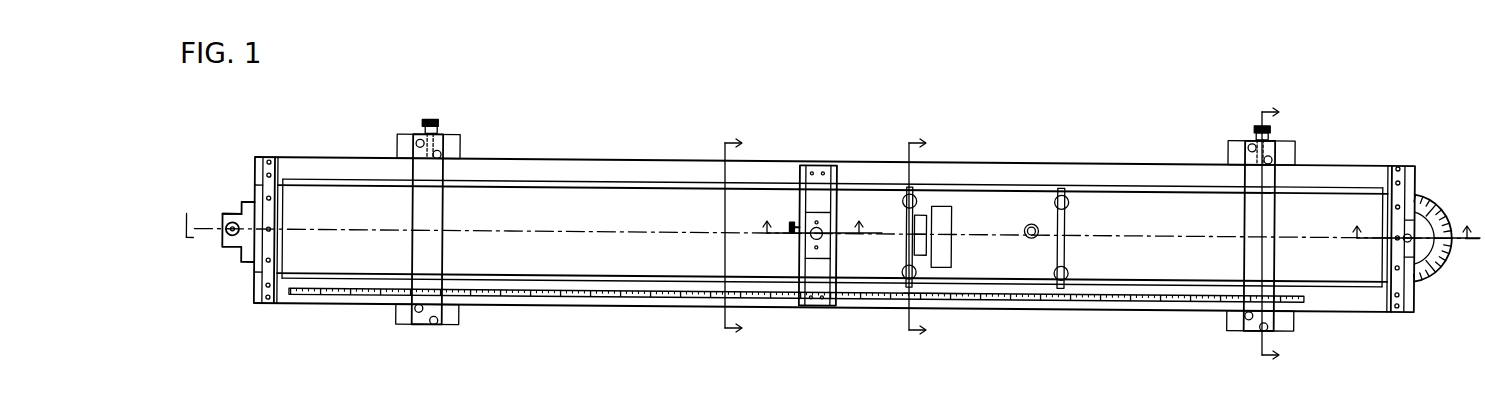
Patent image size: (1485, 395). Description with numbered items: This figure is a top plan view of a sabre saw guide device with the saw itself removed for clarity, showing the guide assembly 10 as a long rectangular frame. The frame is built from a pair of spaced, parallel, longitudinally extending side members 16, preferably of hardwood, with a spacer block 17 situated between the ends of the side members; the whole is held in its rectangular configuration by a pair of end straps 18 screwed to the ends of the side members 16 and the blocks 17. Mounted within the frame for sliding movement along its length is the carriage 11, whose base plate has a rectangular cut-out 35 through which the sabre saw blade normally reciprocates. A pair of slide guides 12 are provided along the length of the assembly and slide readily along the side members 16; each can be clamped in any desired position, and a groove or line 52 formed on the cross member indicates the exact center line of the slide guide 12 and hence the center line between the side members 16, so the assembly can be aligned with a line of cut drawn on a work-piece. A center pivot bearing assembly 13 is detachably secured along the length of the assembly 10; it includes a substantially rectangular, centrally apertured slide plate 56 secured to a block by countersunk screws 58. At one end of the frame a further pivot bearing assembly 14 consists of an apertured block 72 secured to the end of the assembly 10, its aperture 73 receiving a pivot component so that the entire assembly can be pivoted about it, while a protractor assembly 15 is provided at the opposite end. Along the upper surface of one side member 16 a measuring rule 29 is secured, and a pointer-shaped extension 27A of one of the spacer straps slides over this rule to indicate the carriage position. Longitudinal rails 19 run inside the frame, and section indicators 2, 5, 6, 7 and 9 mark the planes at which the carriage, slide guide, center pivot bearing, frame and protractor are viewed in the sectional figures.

The guide assembly 10 is at (580, 158).
The carriage 11 is at (990, 200).
The slide guide 12 is at (446, 131).
The center pivot bearing assembly 13 is at (845, 173).
The pivot bearing assembly 14 is at (237, 266).
The protractor assembly 15 is at (1432, 194).
The side member 16 is at (332, 173).
The spacer block 17 is at (281, 200).
The end strap 18 is at (270, 168).
The guide rails 19 is at (600, 273).
The measuring rule 29 is at (1208, 300).
The extension 27A is at (913, 292).
The rectangular cut-out 35 is at (942, 253).
The groove 52 is at (432, 228).
The slide plate 56 is at (823, 255).
The countersunk screw 58 is at (816, 246).
The apertured block 72 is at (232, 214).
The aperture 73 is at (232, 234).
The section line 2- 2 is at (926, 238).
The section line 5- 5 is at (1280, 233).
The section line 6- 6 is at (821, 218).
The section line 7- 7 is at (742, 236).
The section line 9- 9 is at (1416, 222).